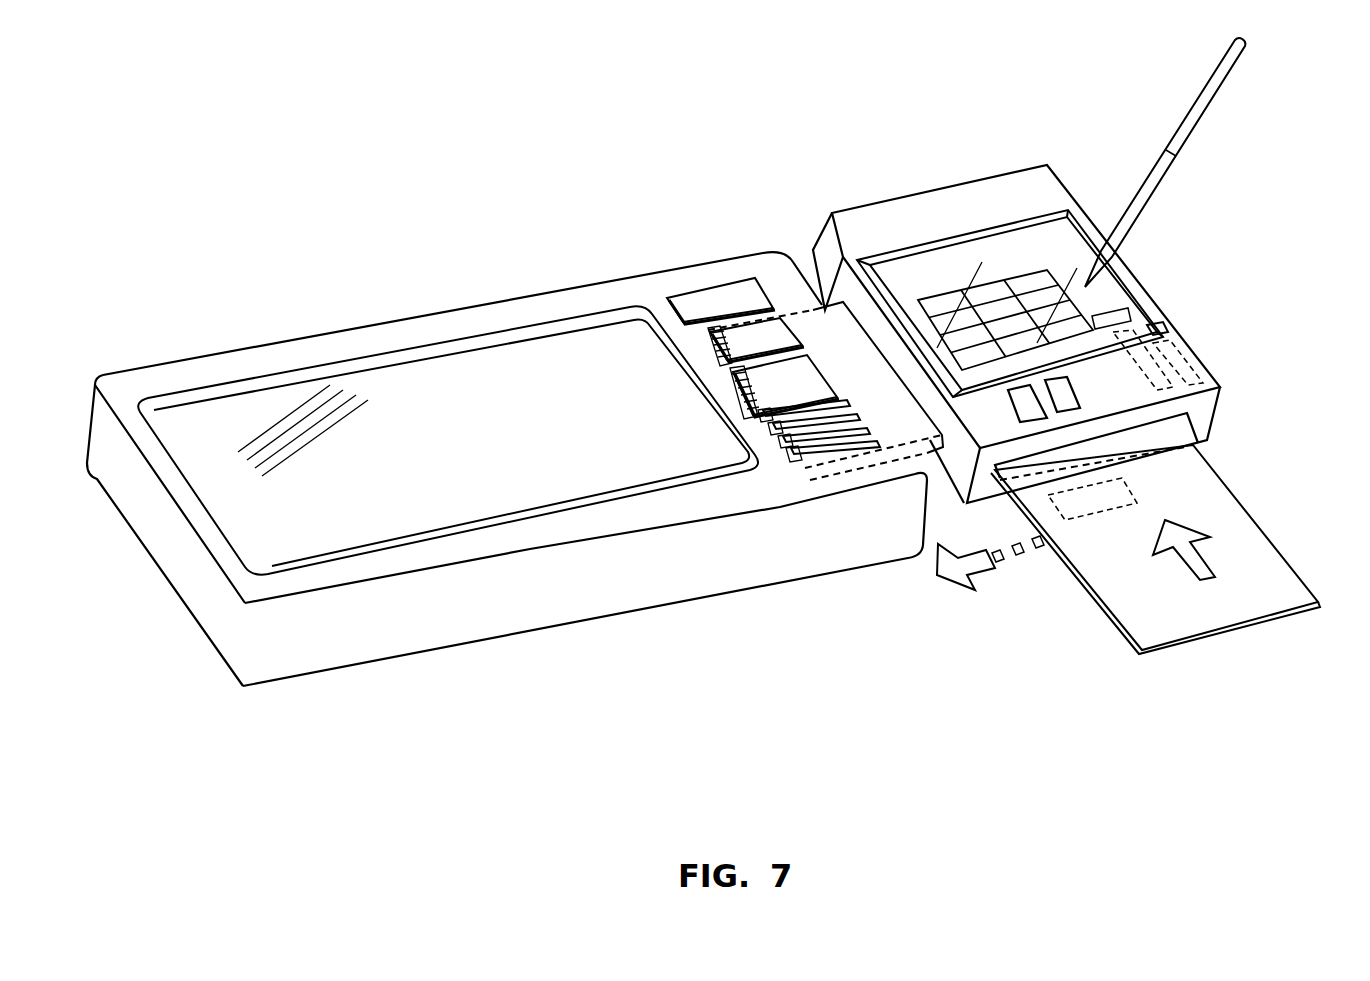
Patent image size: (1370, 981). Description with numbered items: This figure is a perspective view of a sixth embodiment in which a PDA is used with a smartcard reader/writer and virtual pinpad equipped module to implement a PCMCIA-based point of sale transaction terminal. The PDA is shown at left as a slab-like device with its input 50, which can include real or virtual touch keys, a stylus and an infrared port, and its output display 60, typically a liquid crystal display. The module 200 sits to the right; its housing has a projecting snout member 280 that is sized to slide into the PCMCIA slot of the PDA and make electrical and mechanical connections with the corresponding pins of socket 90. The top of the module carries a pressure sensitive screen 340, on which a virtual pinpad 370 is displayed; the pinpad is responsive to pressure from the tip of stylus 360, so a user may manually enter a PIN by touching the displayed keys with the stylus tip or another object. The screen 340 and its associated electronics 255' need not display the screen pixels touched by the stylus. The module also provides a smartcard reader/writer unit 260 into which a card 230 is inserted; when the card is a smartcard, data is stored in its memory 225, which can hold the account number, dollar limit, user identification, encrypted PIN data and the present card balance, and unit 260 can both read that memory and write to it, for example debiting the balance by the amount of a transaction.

The input 50 is at (682, 215).
The display 60 is at (276, 400).
The socket 90 is at (700, 357).
The module 200 is at (937, 114).
The memory 225 is at (1115, 497).
The card 230 is at (1316, 560).
The electronics 255' is at (1183, 360).
The smartcard reader/writer unit 260 is at (805, 466).
The snout member 280 is at (817, 305).
The pressure sensitive screen 340 is at (917, 262).
The stylus 360 is at (1212, 108).
The virtual pinpad 370 is at (1050, 275).